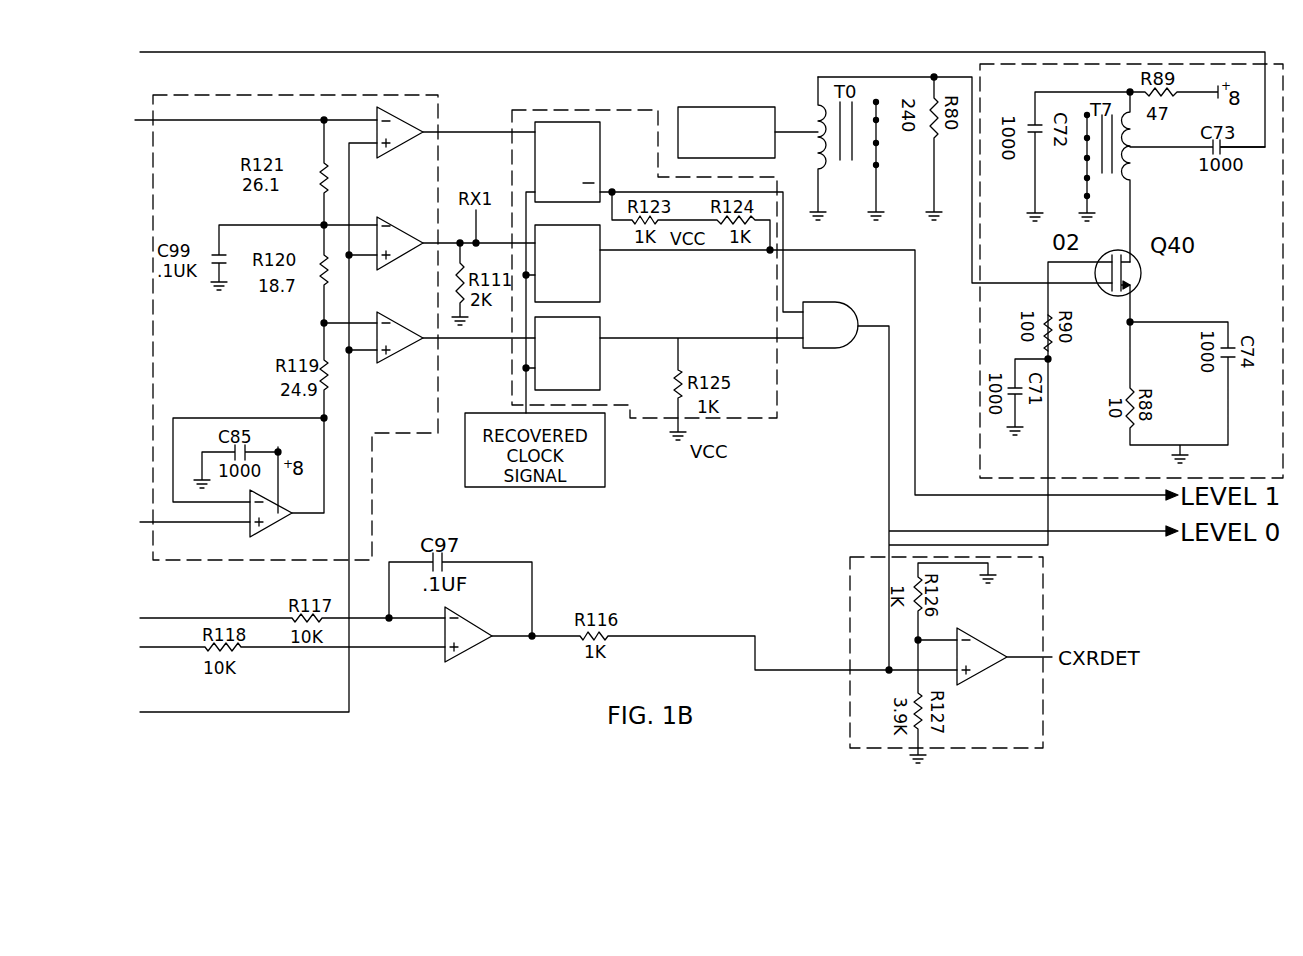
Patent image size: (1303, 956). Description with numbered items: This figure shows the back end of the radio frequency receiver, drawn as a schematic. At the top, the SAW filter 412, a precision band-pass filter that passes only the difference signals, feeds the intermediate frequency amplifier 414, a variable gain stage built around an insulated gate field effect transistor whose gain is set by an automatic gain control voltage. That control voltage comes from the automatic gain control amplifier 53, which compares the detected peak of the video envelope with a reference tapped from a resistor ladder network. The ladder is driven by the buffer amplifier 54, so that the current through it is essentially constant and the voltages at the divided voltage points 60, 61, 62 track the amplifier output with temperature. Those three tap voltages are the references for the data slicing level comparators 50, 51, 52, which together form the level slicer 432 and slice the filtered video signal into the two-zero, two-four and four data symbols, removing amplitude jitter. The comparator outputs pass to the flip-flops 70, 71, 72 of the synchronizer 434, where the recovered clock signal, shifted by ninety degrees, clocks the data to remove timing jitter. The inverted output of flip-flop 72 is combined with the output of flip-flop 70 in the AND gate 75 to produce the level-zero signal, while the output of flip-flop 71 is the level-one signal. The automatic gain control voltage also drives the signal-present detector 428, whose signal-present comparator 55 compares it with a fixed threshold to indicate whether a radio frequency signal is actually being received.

The level slicer 432 is at (406, 91).
The synchronizer 434 is at (547, 104).
The SAW filter 412 is at (737, 106).
The intermediate frequency amplifier 414 is at (1280, 264).
The signal-present detector 428 is at (857, 550).
The divided voltage point 62 is at (324, 119).
The divided voltage point 61 is at (324, 224).
The divided voltage point 60 is at (324, 323).
The data slicing level comparator 52 is at (397, 152).
The data slicing level comparator 51 is at (397, 262).
The data slicing level comparator 50 is at (397, 355).
The buffer amplifier 54 is at (268, 527).
The automatic gain control amplifier 53 is at (470, 652).
The signal-present comparator 55 is at (980, 672).
The flip-flop 72 is at (602, 140).
The flip-flop 71 is at (600, 283).
The flip-flop 70 is at (602, 368).
The AND gate 75 is at (830, 302).